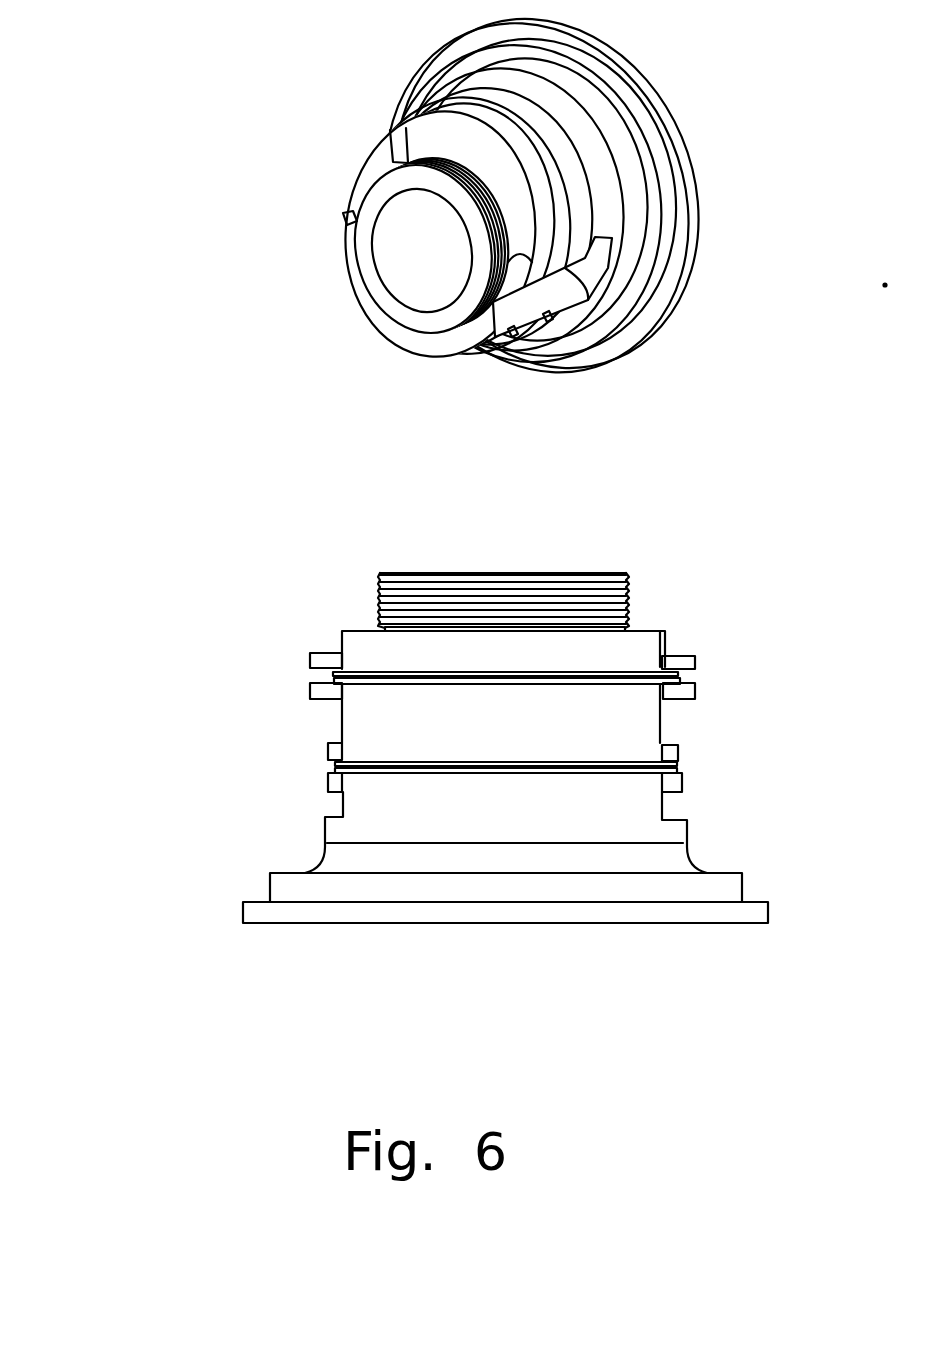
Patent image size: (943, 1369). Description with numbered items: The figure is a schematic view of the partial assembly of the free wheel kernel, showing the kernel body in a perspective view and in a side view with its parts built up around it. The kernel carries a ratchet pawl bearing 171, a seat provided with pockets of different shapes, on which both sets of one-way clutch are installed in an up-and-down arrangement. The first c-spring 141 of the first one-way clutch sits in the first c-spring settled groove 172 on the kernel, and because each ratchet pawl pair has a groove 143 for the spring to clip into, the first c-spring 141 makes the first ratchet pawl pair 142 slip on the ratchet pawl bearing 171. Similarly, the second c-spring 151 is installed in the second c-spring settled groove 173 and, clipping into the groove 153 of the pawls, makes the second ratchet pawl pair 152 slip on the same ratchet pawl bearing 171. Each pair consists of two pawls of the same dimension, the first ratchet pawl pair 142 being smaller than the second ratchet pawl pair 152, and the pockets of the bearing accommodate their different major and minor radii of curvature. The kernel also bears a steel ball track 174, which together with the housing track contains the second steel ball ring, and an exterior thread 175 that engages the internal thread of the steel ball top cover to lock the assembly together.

The first c-spring 141 is at (333, 674).
The first ratchet pawl pair 142 is at (320, 659).
The groove 143 is at (696, 678).
The second c-spring 151 is at (675, 771).
The second ratchet pawl pair 152 is at (675, 752).
The groove 153 is at (335, 765).
The ratchet pawl bearing 171 is at (560, 285).
The first c-spring settled groove 172 is at (560, 215).
The second c-spring settled groove 173 is at (592, 195).
The steel ball track 174 is at (320, 866).
The kernel's exterior thread 175 is at (630, 592).